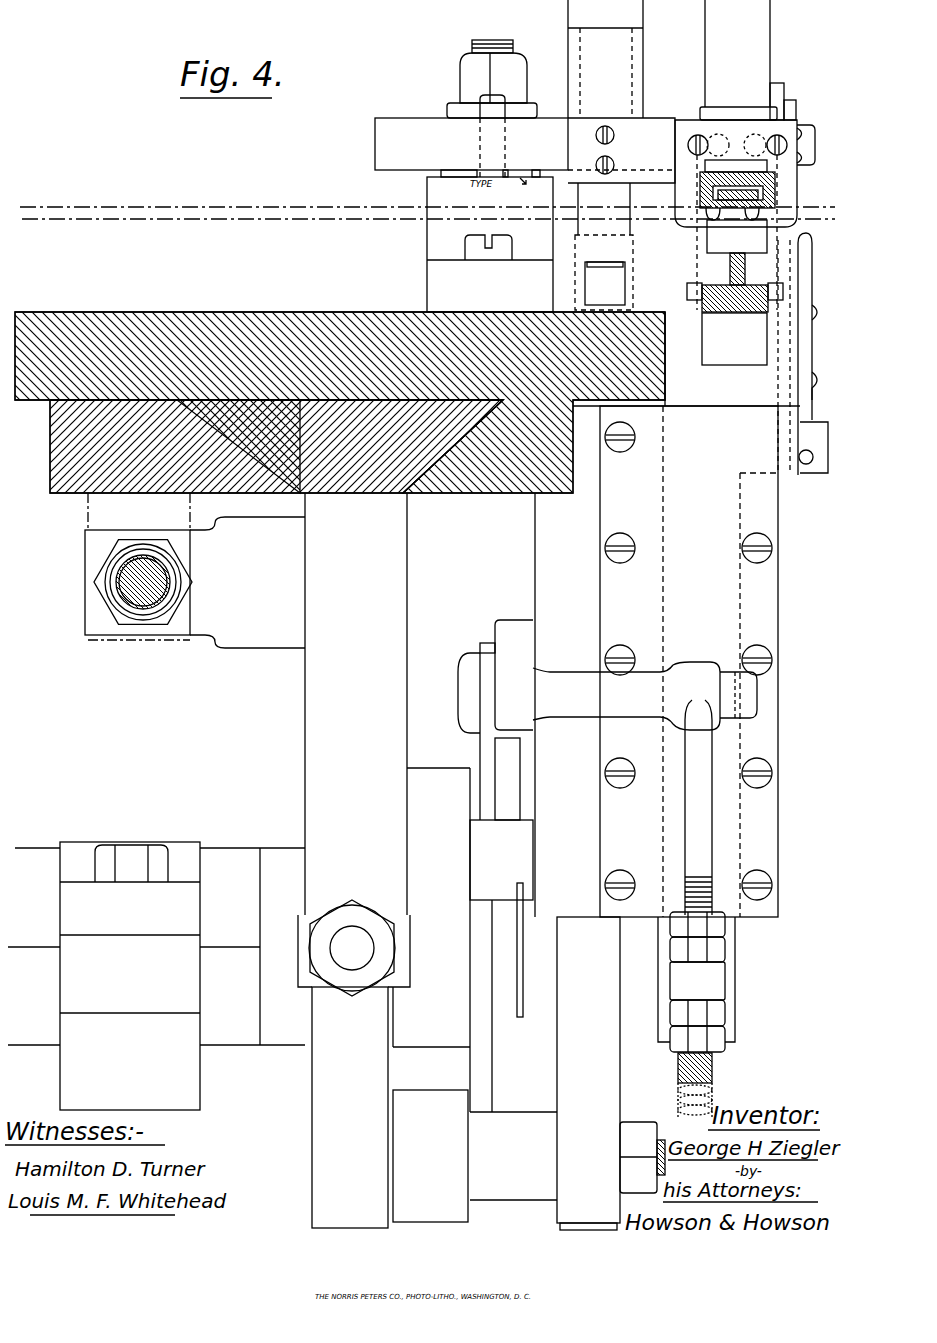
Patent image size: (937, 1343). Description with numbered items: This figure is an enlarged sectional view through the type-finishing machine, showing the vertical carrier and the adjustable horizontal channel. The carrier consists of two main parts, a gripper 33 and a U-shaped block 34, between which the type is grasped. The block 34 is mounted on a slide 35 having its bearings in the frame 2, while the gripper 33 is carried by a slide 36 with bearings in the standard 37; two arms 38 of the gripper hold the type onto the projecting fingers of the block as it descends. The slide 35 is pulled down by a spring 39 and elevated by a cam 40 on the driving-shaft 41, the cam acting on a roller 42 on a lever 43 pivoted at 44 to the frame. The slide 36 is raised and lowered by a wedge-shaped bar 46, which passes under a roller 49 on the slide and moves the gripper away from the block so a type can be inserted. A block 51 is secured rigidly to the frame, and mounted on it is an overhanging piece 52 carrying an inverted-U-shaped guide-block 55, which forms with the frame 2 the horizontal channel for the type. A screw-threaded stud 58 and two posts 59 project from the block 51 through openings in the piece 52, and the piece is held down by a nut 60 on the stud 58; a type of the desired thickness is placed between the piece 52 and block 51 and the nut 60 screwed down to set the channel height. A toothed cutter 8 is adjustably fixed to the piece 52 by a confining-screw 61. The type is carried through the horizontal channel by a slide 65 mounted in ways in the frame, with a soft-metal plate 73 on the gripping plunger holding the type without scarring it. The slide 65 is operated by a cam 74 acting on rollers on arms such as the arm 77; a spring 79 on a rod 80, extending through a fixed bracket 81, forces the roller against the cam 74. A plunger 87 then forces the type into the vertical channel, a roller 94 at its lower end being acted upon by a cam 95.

The frame 2 is at (543, 511).
The cutter 8 is at (790, 118).
The gripper part of vertical carrier 33 is at (736, 215).
The U-shaped block 34 is at (686, 329).
The slide 35 is at (665, 535).
The slide 36 is at (605, 59).
The standard 37 is at (617, 18).
The arms 38 is at (733, 213).
The spring 39 is at (678, 1103).
The cam 40 is at (482, 984).
The driving-shaft 41 is at (524, 953).
The roller 42 is at (507, 779).
The lever 43 is at (626, 675).
The pivot 44 is at (458, 700).
The wedge-shaped bar 46 is at (694, 876).
The roller 49 is at (604, 246).
The block 51 is at (490, 244).
The overhanging piece 52 is at (525, 150).
The guide-block 55 is at (738, 60).
The screw-threaded stud 58 is at (492, 40).
The posts 59 is at (497, 110).
The nut 60 is at (492, 85).
The confining-screw 61 is at (816, 145).
The slide 65 is at (375, 490).
The soft-metal plate 73 is at (737, 236).
The cam 74 is at (350, 1107).
The arm 77 is at (354, 744).
The spring 79 is at (107, 581).
The rod 80 is at (152, 578).
The fixed lug or bracket 81 is at (195, 570).
The plunger 87 is at (588, 1073).
The roller 94 is at (430, 1156).
The cam 95 is at (431, 976).